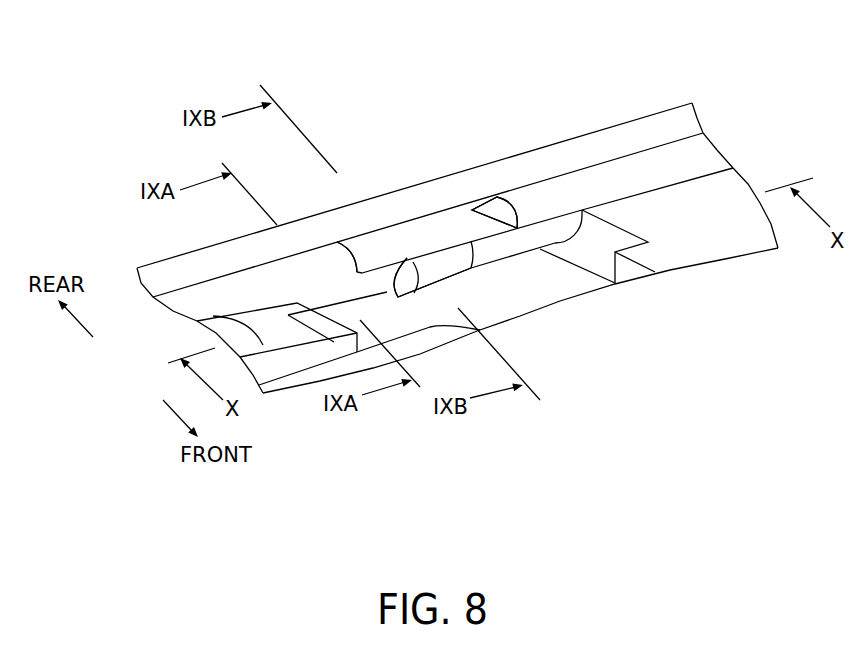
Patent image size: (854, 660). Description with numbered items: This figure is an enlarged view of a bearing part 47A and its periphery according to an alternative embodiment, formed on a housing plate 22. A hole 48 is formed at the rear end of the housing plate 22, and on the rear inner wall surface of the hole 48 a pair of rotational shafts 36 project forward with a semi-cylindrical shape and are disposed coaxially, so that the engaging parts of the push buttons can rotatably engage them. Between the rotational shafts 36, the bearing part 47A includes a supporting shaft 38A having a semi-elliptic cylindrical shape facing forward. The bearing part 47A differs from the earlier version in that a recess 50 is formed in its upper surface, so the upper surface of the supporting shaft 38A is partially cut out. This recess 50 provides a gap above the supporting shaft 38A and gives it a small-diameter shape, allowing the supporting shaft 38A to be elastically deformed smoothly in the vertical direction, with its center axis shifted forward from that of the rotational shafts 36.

The housing plate 22 is at (137, 39).
The rotational shaft 36 is at (385, 273).
The supporting shaft 38A is at (448, 265).
The bearing part 47A is at (522, 83).
The hole 48 is at (598, 235).
The recess 50 is at (367, 252).